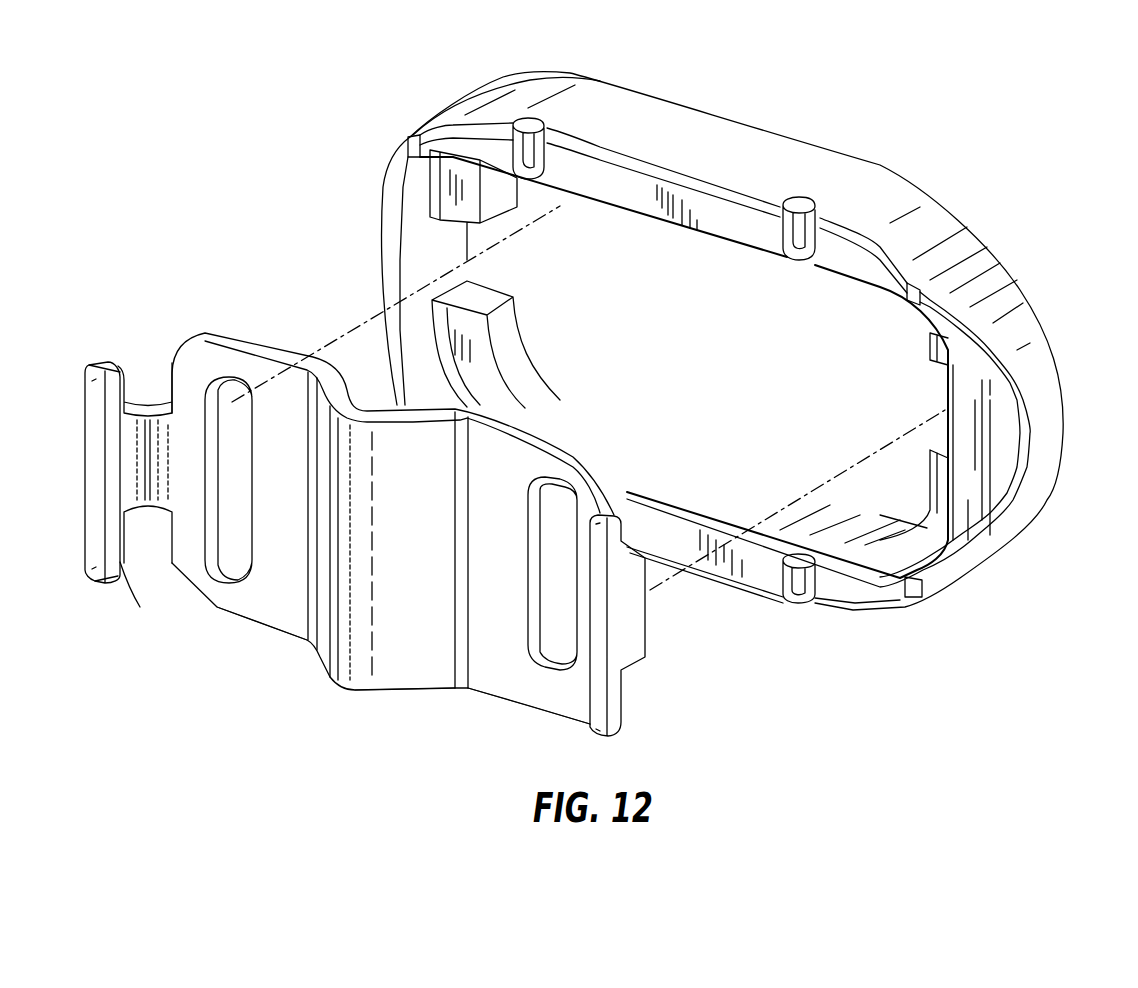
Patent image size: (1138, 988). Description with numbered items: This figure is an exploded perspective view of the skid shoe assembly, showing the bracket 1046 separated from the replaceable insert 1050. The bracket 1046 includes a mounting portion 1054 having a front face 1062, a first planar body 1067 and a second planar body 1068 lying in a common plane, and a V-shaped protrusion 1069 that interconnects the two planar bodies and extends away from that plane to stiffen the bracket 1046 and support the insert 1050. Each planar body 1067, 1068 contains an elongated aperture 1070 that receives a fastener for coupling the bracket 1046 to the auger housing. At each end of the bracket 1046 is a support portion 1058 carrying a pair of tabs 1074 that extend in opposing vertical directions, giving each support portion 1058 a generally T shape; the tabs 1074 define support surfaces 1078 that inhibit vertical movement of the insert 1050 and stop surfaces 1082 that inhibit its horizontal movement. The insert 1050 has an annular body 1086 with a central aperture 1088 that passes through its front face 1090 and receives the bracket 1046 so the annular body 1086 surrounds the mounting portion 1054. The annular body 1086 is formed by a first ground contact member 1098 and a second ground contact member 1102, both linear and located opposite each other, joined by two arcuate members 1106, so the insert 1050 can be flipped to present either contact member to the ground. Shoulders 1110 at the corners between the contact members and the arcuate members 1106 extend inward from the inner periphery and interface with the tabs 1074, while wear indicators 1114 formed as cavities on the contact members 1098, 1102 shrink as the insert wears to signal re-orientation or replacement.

The bracket 1046 is at (197, 620).
The replaceable insert 1050 is at (1020, 198).
The mounting portion 1054 is at (257, 343).
The support portions 1058 is at (84, 479).
The front face 1062 is at (392, 492).
The first planar body 1067 is at (518, 682).
The second planar body 1068 is at (277, 605).
The V-shaped protrusion 1069 is at (355, 695).
The elongated aperture 1070 is at (243, 545).
The tabs 1074 is at (122, 372).
The support surfaces 1078 is at (145, 405).
The stop surfaces 1082 is at (140, 530).
The annular body 1086 is at (877, 163).
The central aperture 1088 is at (647, 256).
The front face 1090 is at (686, 367).
The first ground contact member 1098 is at (710, 138).
The second ground contact member 1102 is at (740, 590).
The arcuate members 1106 is at (372, 238).
The shoulders 1110 is at (523, 197).
The wear indicators 1114 is at (530, 140).